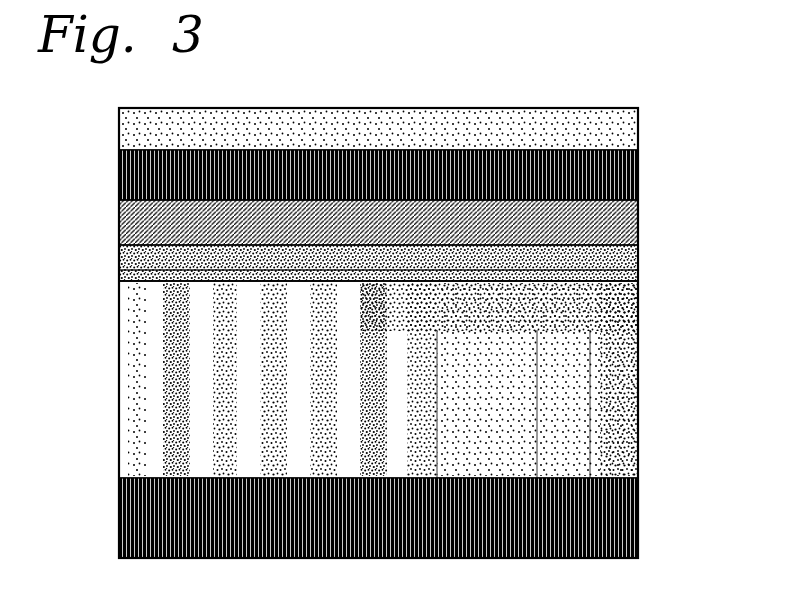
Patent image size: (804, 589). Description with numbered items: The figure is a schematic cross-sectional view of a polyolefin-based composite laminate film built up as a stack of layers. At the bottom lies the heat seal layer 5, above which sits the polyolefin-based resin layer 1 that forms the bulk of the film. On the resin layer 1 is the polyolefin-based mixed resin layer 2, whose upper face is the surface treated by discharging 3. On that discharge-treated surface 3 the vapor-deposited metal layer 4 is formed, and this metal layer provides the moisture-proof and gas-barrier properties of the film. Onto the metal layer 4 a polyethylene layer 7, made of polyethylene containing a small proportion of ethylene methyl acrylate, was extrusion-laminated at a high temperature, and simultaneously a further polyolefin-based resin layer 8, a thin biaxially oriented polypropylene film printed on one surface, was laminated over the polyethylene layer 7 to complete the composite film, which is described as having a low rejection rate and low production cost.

The polyolefin-based resin layer 1 is at (638, 372).
The polyolefin-based mixed resin layer 2 is at (638, 268).
The surface treated by discharging 3 is at (638, 242).
The vapor-deposited metal layer 4 is at (638, 215).
The heat seal layer 5 is at (638, 518).
The polyethylene layer 7 is at (638, 160).
The polyolefin-based resin layer 8 is at (305, 108).